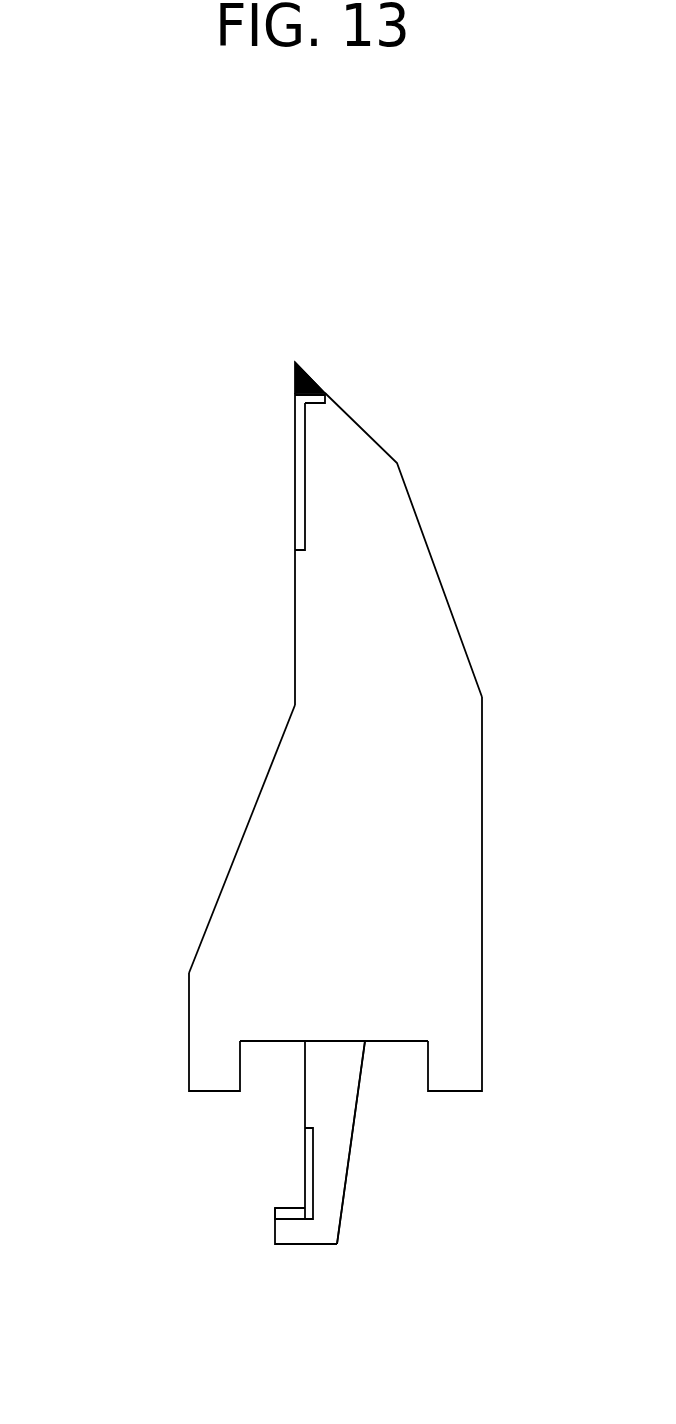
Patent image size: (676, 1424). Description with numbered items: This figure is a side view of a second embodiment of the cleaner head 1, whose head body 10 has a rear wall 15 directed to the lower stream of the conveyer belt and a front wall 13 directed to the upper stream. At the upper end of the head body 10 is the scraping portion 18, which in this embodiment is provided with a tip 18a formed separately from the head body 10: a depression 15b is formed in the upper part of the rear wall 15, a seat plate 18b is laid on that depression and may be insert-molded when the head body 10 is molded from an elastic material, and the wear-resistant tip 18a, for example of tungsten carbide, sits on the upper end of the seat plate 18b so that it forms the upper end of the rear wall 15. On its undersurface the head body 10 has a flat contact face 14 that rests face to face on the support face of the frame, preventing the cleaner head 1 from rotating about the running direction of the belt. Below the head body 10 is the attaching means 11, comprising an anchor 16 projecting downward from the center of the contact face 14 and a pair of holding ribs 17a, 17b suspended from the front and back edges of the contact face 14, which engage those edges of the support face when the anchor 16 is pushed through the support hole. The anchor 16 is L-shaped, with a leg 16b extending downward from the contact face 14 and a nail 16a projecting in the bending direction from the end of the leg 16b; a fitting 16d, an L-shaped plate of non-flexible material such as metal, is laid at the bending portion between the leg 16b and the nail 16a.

The cleaner head 1 is at (180, 312).
The head body 10 is at (318, 702).
The attaching means 11 is at (163, 1240).
The front wall 13 is at (447, 600).
The contact face 14 is at (290, 1041).
The rear wall 15 is at (295, 582).
The depression 15b is at (303, 507).
The anchor 16 is at (457, 1217).
The nail 16a is at (288, 1245).
The leg 16b is at (355, 1133).
The fitting 16d is at (305, 1185).
The rib 17a is at (462, 1091).
The rib 17b is at (213, 1091).
The scraping portion 18 is at (294, 345).
The tip 18a is at (307, 375).
The seat plate 18b is at (295, 428).